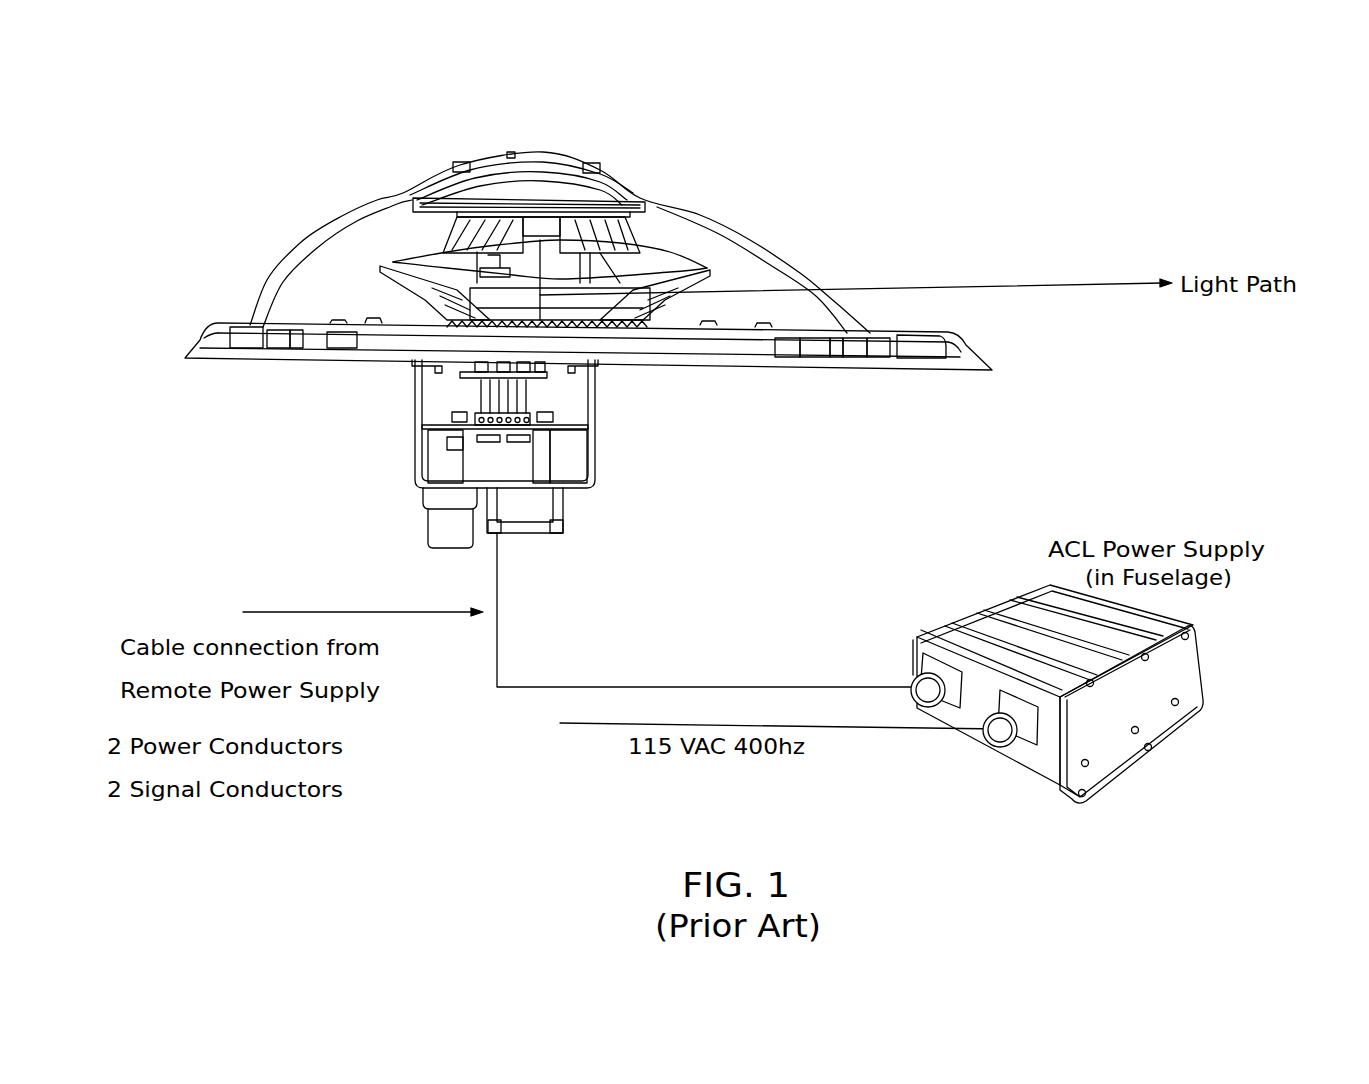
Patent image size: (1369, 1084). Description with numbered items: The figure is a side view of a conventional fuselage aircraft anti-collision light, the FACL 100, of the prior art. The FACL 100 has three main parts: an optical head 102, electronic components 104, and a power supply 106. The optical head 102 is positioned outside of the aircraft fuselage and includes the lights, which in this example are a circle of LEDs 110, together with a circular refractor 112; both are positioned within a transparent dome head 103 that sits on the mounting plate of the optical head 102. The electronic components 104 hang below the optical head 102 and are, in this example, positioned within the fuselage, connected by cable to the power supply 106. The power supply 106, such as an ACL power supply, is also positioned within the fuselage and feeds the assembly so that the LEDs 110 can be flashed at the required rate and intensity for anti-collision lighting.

The FACL 100 is at (961, 108).
The optical head 102 is at (287, 315).
The transparent dome head 103 is at (348, 230).
The electronic components 104 is at (574, 448).
The power supply 106 is at (1174, 666).
The circle of LEDs 110 is at (443, 318).
The circular refractor 112 is at (705, 270).